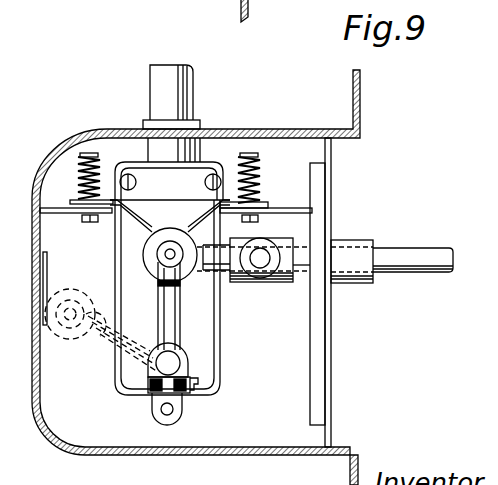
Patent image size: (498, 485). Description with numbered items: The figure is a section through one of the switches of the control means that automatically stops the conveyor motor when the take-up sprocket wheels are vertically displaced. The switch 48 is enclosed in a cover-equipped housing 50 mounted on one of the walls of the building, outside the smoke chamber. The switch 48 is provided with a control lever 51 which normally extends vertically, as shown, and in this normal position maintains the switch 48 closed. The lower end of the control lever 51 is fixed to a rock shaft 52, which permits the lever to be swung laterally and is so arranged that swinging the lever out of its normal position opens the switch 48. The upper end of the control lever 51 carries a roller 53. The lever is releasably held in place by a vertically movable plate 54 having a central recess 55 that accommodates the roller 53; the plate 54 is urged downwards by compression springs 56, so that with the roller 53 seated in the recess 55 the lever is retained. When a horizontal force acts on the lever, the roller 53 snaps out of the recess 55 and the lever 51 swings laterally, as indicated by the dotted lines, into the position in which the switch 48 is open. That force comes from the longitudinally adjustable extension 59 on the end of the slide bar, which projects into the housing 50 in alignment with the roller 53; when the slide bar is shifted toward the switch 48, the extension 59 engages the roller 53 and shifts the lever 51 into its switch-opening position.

The switch 48 is at (212, 127).
The cover-equipped housing 50 is at (278, 130).
The control lever 51 is at (180, 322).
The rock shaft 52 is at (181, 365).
The roller 53 is at (148, 262).
The vertically movable plate 54 is at (267, 207).
The central recess 55 is at (192, 224).
The compression springs 56 is at (259, 172).
The longitudinally adjustable extension 59 is at (405, 248).